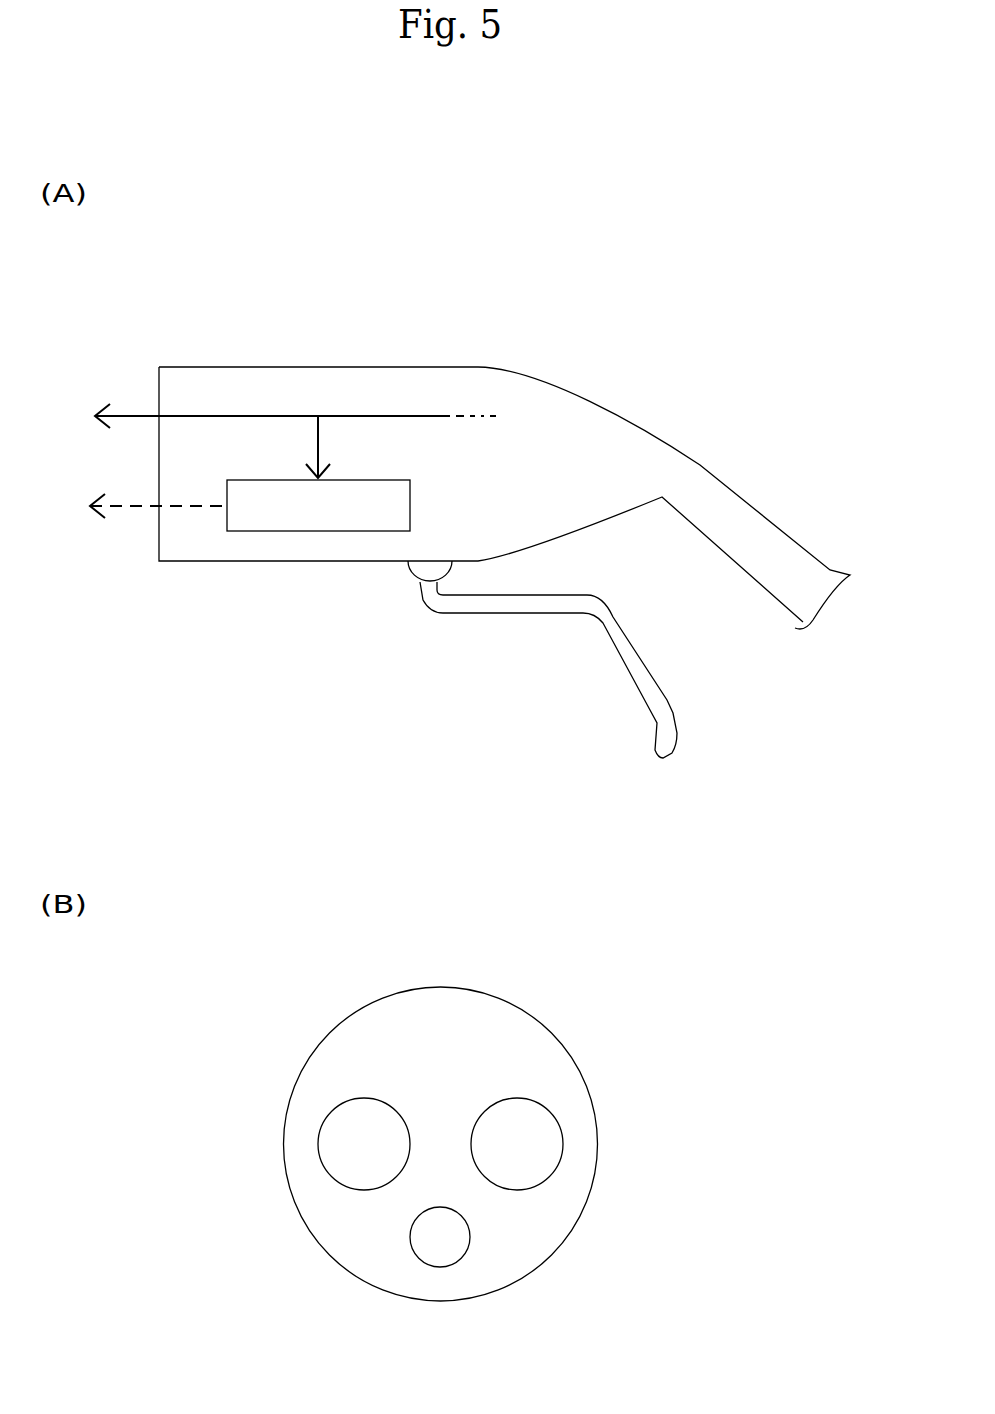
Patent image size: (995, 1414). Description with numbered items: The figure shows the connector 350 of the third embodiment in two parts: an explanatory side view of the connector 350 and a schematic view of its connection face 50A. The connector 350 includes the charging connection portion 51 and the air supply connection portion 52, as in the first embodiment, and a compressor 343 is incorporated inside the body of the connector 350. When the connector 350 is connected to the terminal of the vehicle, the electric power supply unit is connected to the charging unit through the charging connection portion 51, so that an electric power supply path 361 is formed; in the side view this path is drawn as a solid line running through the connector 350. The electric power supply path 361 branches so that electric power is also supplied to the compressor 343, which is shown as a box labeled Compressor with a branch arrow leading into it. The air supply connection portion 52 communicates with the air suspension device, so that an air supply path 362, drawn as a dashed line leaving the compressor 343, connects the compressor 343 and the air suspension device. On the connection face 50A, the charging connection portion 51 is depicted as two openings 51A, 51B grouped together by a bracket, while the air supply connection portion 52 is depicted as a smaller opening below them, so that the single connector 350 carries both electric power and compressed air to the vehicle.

The connector 350 is at (248, 365).
The electric power supply path 361 is at (358, 416).
The air supply path 362 is at (177, 512).
The compressor 343 is at (337, 531).
The nozzle end face 50A is at (432, 1027).
The charging connection portion 51 is at (524, 1106).
The first discharge opening 51A is at (367, 1135).
The second discharge opening 51B is at (520, 1137).
The air supply connection portion 52 is at (447, 1235).